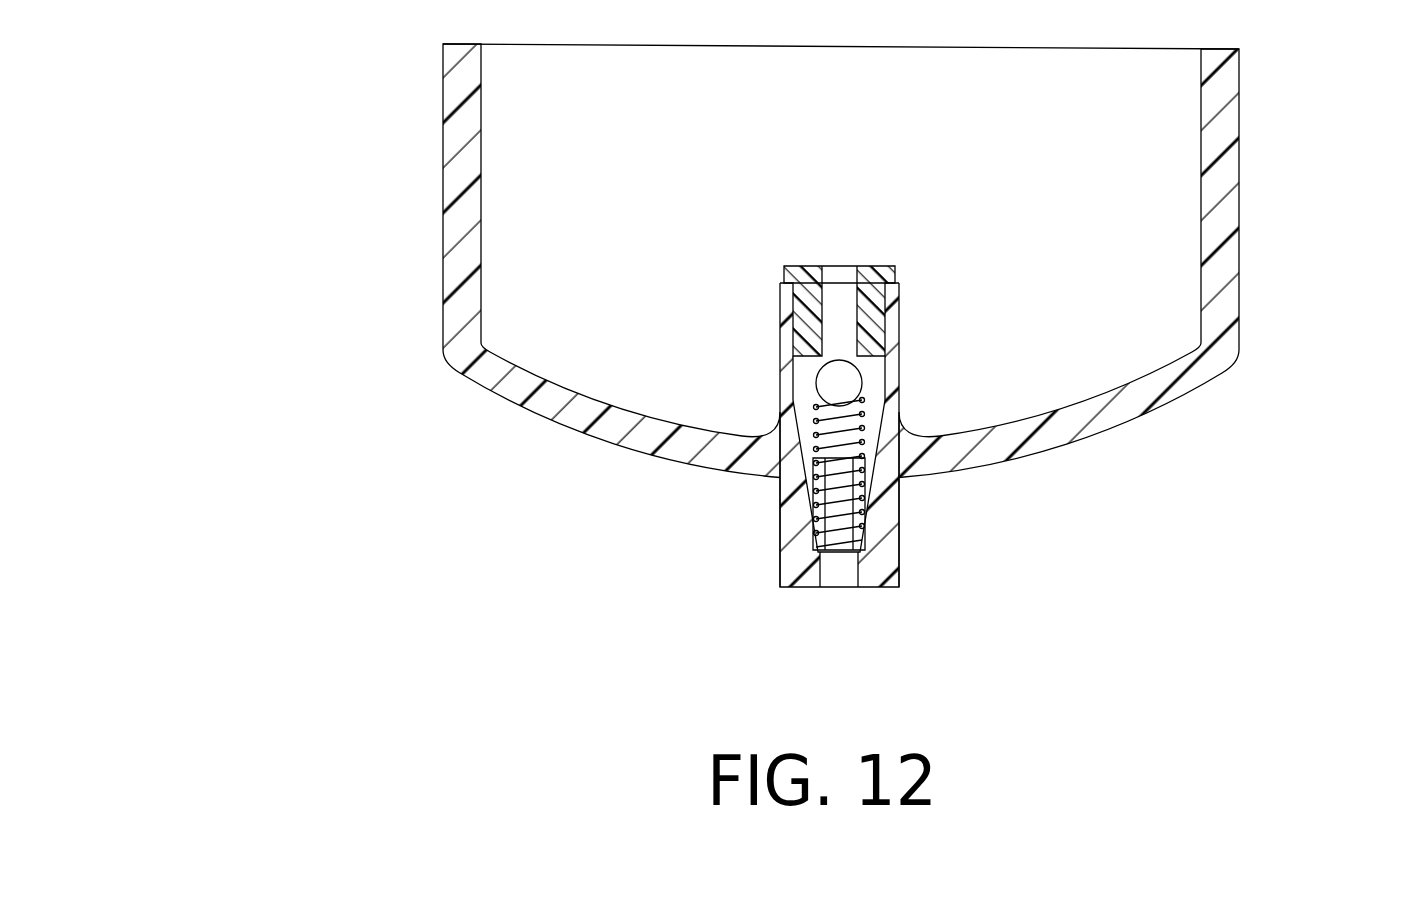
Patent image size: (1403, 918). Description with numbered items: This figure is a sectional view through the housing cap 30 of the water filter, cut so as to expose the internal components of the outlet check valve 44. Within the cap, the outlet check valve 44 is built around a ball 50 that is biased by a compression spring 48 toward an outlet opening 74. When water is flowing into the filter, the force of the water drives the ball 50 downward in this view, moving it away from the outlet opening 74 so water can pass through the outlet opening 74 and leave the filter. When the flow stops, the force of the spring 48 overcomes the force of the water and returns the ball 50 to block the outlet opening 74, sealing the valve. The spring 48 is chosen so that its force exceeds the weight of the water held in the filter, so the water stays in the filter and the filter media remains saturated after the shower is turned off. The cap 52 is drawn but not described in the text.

The housing cap 30 is at (369, 539).
The outlet check valve 44 is at (923, 517).
The compression spring 48 is at (778, 580).
The ball 50 is at (888, 370).
The valve cap 52 is at (897, 283).
The outlet opening 74 is at (863, 371).